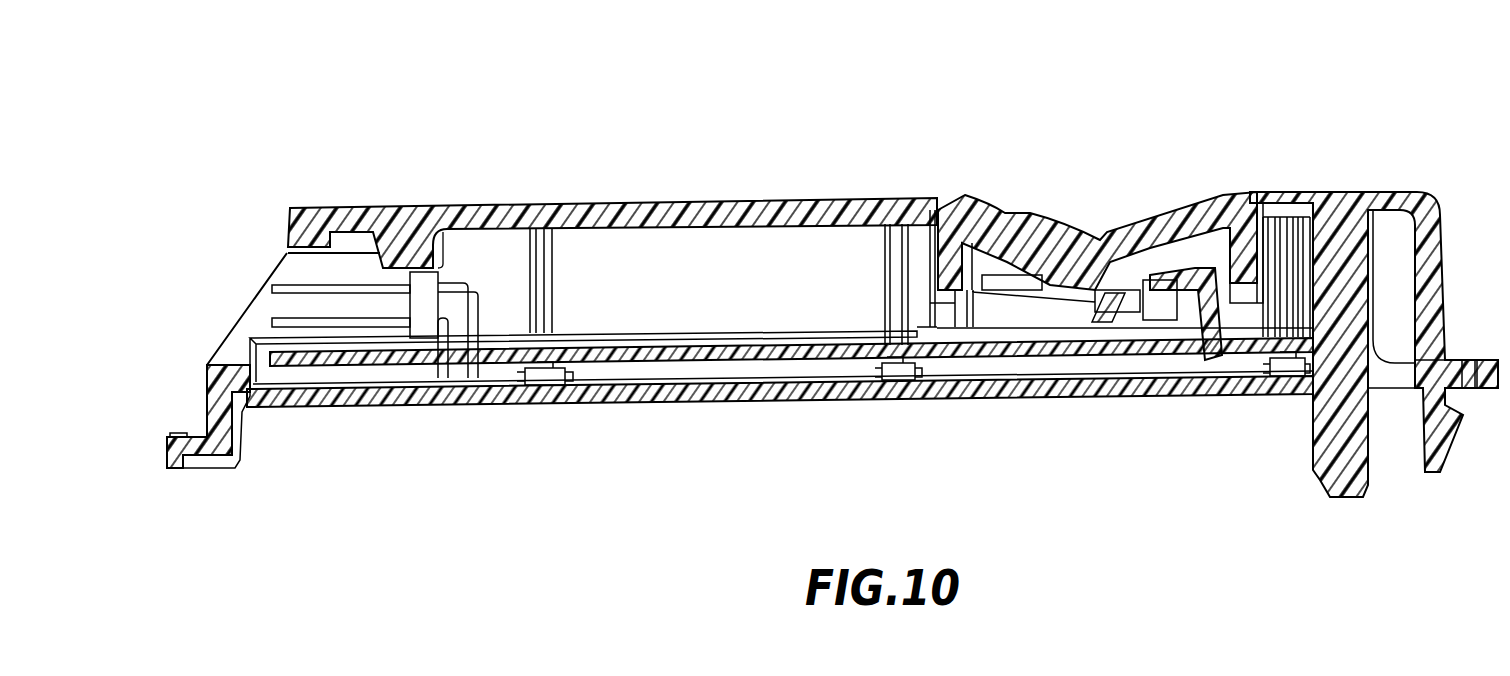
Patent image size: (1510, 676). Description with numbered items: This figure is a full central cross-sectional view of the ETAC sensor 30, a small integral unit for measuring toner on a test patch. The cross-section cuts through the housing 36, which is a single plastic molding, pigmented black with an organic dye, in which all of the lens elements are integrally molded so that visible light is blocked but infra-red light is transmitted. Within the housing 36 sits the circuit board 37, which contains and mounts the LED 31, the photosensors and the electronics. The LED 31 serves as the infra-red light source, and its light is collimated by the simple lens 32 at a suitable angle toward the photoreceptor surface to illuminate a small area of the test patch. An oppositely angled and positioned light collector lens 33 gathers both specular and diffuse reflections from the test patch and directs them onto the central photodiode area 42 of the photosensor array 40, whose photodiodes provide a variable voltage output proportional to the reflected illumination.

The ETAC sensor 30 is at (953, 115).
The LED 31 is at (1167, 318).
The lens 32 is at (1150, 262).
The light collector lens 33 is at (1052, 250).
The housing 36 is at (697, 200).
The circuit board 37 is at (718, 357).
The photosensor array 40 is at (1002, 362).
The central photodiode area 42 is at (1040, 320).